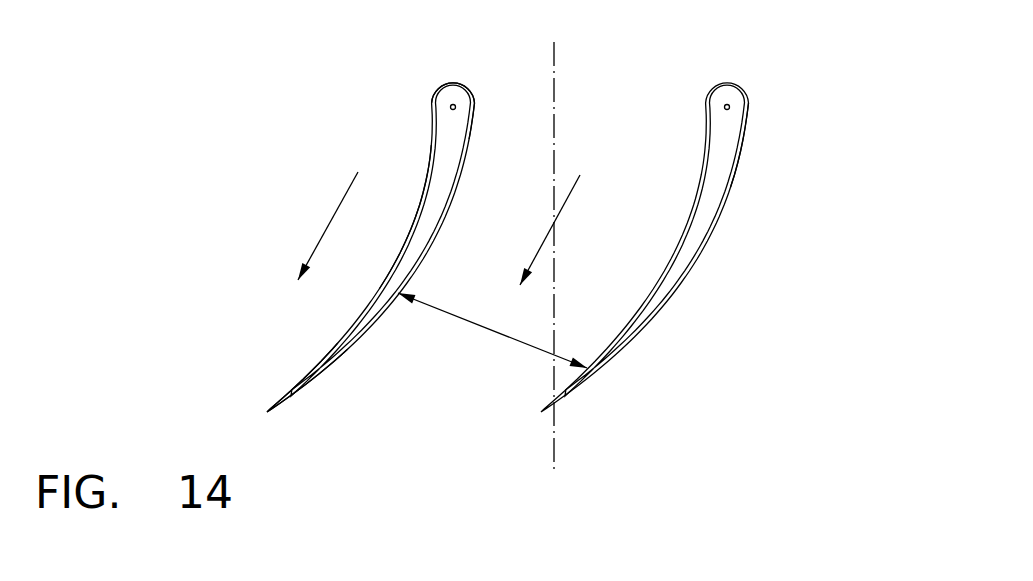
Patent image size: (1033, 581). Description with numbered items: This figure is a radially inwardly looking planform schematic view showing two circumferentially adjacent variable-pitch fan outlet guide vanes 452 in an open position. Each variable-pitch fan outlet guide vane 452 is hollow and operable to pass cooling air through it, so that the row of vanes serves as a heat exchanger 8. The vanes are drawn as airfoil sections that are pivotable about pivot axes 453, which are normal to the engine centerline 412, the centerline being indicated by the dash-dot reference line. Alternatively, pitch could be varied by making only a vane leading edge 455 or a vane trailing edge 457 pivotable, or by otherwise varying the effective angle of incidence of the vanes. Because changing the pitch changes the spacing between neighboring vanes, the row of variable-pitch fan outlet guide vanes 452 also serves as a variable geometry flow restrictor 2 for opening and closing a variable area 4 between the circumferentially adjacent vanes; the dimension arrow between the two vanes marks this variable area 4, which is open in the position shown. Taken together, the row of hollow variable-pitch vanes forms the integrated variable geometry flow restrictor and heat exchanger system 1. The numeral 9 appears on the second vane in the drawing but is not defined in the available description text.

The integrated variable geometry flow restrictor and heat exchanger system 1 is at (385, 146).
The variable geometry flow restrictor 2 is at (703, 273).
The variable area 4 is at (494, 332).
The heat exchanger 8 is at (421, 204).
The suction side of blade 9 is at (727, 142).
The engine centerline 412 is at (556, 438).
The variable-pitch fan outlet guide vane 452 is at (455, 197).
The pivot axis 453 is at (453, 104).
The vane leading edge 455 is at (474, 112).
The vane trailing edge 457 is at (340, 356).